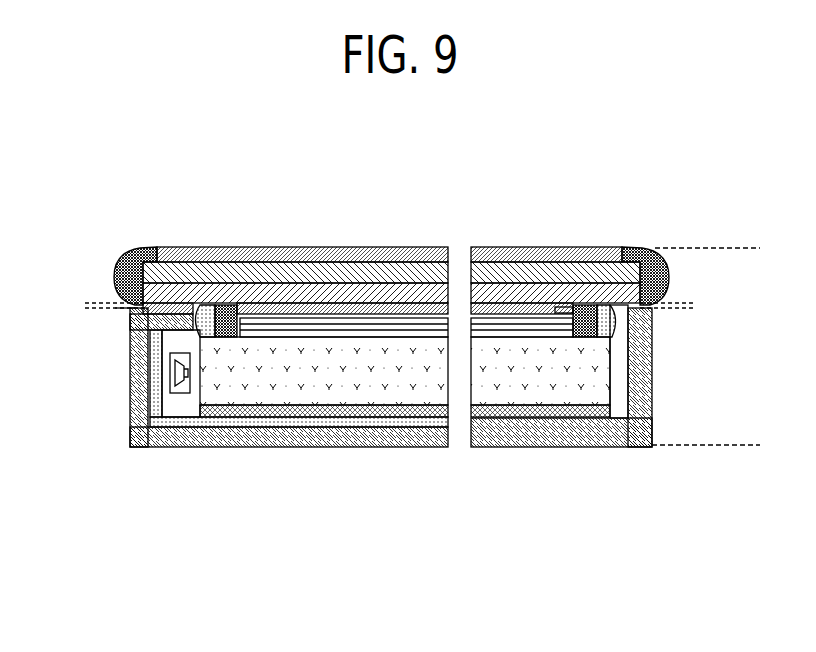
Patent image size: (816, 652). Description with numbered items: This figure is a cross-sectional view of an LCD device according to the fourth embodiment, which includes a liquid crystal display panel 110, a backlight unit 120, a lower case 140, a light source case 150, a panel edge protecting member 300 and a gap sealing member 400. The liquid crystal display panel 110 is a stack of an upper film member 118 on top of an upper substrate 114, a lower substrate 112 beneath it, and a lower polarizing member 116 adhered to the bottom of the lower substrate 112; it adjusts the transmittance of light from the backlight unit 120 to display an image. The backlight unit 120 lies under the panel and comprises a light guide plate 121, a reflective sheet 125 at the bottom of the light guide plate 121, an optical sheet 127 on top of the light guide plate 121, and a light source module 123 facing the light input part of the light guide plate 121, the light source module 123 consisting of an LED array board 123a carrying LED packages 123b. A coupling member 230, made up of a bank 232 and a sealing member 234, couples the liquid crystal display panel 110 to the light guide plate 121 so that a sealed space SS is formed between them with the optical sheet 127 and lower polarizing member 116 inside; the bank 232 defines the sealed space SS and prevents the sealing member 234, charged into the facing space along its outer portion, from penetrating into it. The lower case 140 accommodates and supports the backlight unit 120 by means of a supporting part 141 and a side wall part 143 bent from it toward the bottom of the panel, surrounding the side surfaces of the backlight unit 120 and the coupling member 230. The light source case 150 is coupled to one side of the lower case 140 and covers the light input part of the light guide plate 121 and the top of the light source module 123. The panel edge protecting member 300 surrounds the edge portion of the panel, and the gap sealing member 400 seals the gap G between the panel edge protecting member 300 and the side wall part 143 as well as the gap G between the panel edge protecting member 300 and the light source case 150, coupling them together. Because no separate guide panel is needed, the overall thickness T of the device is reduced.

The liquid crystal display panel 110 is at (318, 172).
The upper film member 118 is at (315, 253).
The upper substrate 114 is at (357, 272).
The lower substrate 112 is at (397, 293).
The lower polarizing member 116 is at (437, 307).
The sealed space SS is at (563, 310).
The panel edge protecting member 300 is at (132, 262).
The gap G is at (688, 328).
The gap sealing member 400 is at (115, 312).
The light source case 150 is at (155, 368).
The lower case 140 is at (148, 405).
The side wall part 143 is at (642, 357).
The supporting part 141 is at (623, 403).
The backlight unit 120 is at (198, 570).
The light source module 123 is at (227, 519).
The LED array board 123a is at (233, 422).
The LED package 123b is at (181, 393).
The light guide plate 121 is at (277, 380).
The reflective sheet 125 is at (335, 412).
The optical sheet 127 is at (410, 325).
The coupling member 230 is at (530, 506).
The bank 232 is at (580, 322).
The sealing member 234 is at (605, 322).
The thickness T is at (748, 250).